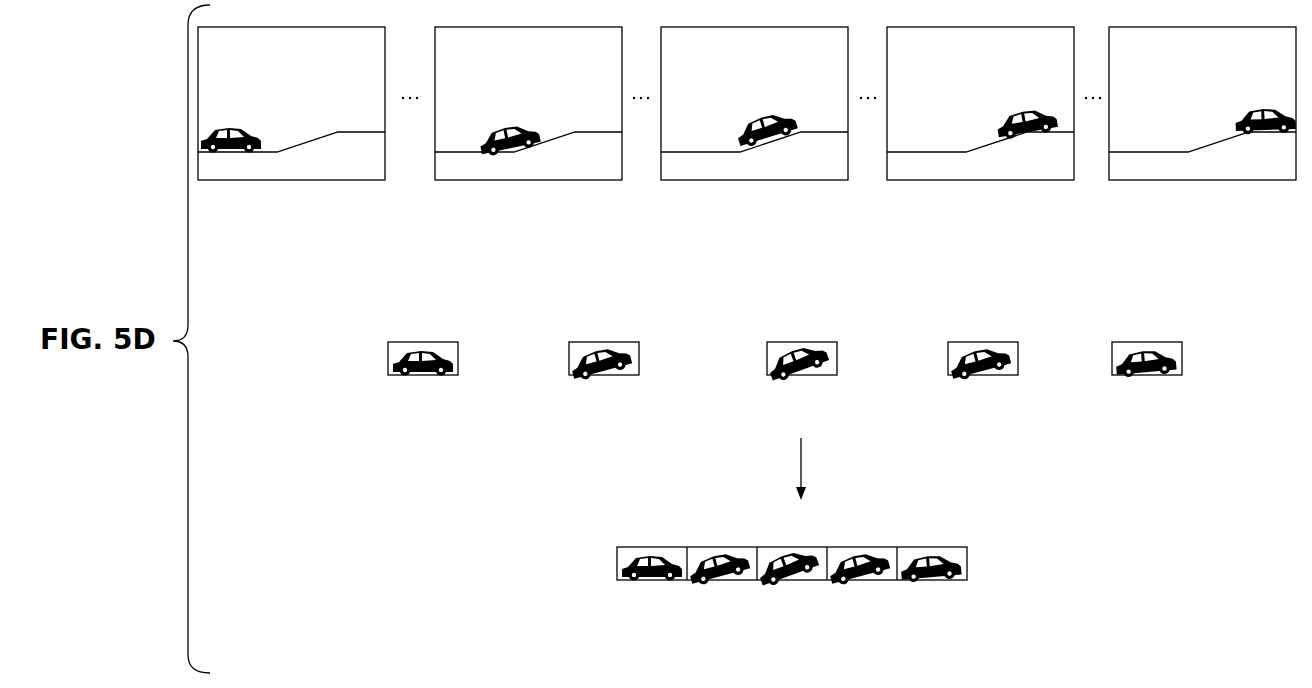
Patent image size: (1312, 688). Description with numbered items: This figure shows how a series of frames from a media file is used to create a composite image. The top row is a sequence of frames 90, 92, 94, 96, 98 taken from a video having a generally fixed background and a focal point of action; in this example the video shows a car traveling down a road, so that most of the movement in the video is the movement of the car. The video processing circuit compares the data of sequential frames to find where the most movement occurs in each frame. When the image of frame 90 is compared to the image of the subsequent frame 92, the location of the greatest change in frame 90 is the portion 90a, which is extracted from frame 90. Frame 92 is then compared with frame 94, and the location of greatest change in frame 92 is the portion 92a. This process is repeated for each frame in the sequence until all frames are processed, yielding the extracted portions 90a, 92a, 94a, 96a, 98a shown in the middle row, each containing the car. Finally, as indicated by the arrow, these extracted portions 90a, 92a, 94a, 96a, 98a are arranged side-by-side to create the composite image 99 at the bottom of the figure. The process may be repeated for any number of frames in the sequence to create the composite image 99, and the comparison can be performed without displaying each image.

The frame 90 is at (372, 182).
The frame 92 is at (582, 182).
The frame 94 is at (797, 182).
The frame 96 is at (1017, 182).
The frame 98 is at (1237, 182).
The portion 90a is at (442, 377).
The portion 92a is at (604, 377).
The portion 94a is at (800, 377).
The portion 96a is at (982, 377).
The portion 98a is at (1148, 377).
The composite image 99 is at (595, 537).